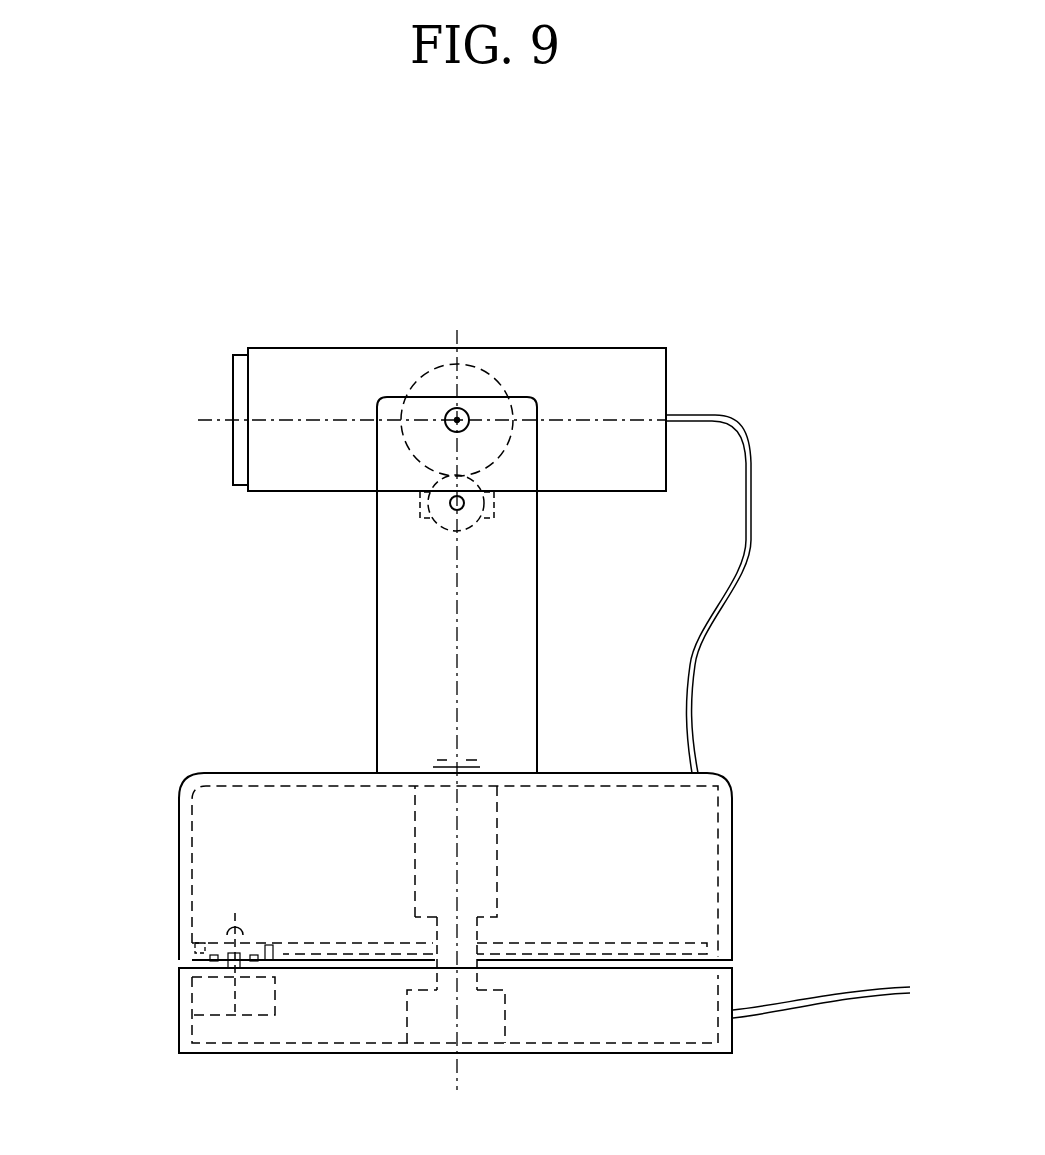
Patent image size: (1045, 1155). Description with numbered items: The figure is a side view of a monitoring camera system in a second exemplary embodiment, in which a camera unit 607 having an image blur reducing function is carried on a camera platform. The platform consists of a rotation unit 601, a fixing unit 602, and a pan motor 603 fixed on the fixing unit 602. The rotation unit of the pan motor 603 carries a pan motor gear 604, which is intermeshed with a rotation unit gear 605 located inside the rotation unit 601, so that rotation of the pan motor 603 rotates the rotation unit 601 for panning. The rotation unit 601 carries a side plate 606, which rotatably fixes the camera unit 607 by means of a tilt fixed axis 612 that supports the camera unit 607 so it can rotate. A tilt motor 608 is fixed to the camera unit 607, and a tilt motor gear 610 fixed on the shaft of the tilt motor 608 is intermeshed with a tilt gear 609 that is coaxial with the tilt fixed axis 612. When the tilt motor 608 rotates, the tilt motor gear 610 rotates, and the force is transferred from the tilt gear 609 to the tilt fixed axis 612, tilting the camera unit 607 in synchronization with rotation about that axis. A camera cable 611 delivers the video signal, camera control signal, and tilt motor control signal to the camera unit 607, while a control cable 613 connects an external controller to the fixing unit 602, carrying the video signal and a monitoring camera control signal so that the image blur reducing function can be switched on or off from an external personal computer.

The rotation unit 601 is at (707, 808).
The fixing unit 602 is at (720, 985).
The pan motor 603 is at (210, 998).
The pan motor gear 604 is at (217, 937).
The rotation unit gear 605 is at (307, 952).
The side plate 606 is at (398, 632).
The camera unit 607 is at (332, 372).
The tilt motor 608 is at (420, 497).
The tilt gear 609 is at (497, 390).
The tilt motor gear 610 is at (438, 527).
The camera cable 611 is at (700, 413).
The tilt fixed axis 612 is at (468, 408).
The control cable 613 is at (833, 995).